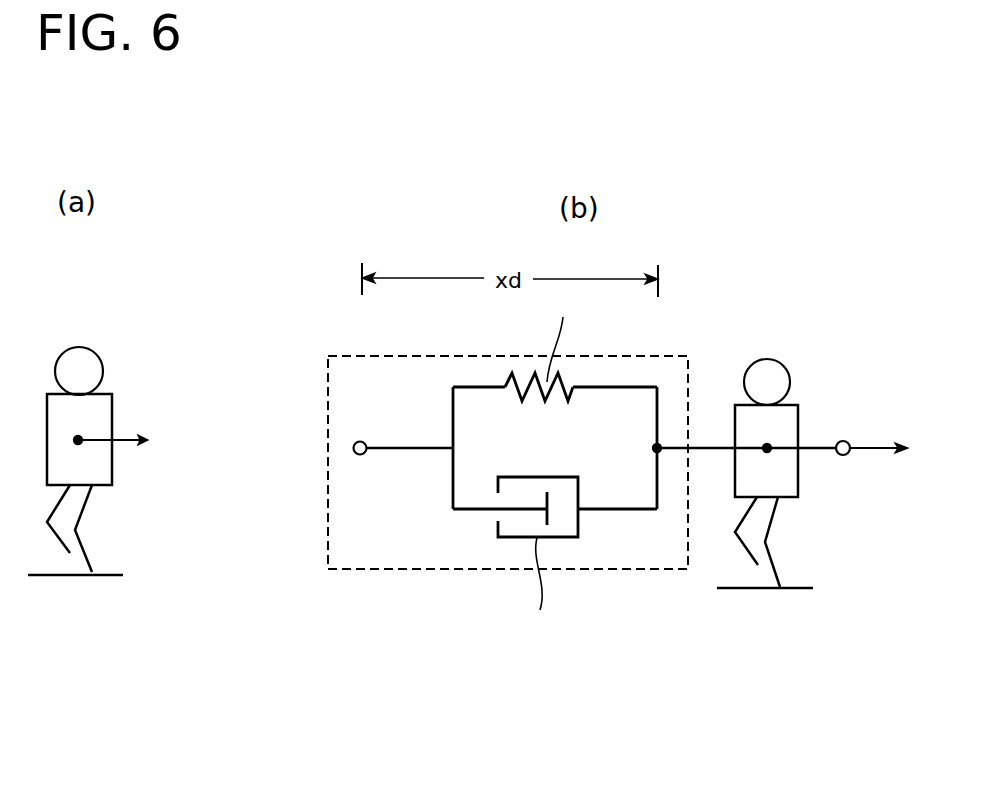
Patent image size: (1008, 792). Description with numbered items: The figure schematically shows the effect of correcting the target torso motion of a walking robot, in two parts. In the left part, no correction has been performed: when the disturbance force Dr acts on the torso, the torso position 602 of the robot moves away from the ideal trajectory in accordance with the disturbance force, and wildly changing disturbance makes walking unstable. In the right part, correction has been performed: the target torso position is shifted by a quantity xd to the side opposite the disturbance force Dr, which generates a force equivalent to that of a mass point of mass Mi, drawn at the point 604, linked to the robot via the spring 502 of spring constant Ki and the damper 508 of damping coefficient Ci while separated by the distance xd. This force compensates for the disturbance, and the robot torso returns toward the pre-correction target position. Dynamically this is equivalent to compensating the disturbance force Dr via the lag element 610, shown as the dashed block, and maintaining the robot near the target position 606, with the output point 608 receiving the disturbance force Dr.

The torso position 602 is at (78, 440).
The input mass point Mi 604 is at (360, 441).
The spring 502 is at (539, 363).
The damper 508 is at (525, 548).
The target position 606 is at (767, 448).
The output point 608 is at (846, 441).
The lag element 610 is at (467, 570).